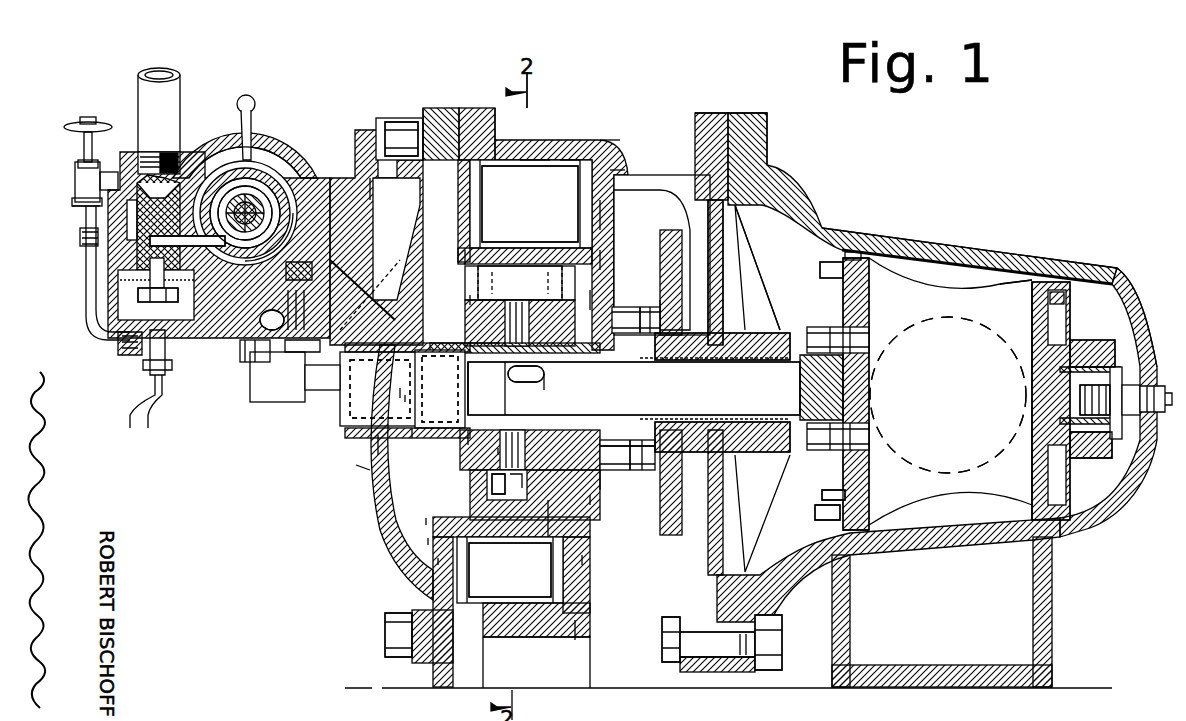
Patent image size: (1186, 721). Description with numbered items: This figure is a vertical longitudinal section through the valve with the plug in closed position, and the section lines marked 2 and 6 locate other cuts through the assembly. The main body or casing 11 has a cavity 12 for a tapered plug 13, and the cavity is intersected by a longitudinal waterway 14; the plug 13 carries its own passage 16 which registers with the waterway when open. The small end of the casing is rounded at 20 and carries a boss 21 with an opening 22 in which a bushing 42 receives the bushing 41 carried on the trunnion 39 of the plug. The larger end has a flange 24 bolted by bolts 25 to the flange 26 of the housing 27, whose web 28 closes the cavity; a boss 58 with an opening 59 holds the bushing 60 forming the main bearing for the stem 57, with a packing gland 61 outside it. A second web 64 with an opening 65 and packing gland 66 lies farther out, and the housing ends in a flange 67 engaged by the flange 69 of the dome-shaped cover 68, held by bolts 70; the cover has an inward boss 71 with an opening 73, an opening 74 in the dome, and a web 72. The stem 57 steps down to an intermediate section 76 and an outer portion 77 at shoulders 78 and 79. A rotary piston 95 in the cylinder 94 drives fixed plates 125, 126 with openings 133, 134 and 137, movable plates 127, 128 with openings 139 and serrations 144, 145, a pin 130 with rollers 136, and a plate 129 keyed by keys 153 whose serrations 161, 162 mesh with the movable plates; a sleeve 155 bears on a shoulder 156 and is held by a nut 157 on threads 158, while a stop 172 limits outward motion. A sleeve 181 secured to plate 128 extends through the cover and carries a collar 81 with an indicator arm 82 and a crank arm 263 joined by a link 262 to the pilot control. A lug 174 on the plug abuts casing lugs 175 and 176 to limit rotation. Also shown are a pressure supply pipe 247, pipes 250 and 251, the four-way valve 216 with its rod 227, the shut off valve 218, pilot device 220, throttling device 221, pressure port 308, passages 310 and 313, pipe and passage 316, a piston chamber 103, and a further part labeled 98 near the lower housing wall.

The section line 2- 2 is at (526, 81).
The section line 6- 6 is at (72, 214).
The main body or casing 11 is at (935, 250).
The cavity 12 is at (1010, 272).
The tapered plug 13 is at (845, 258).
The longitudinal waterway or opening 14 is at (905, 330).
The passage 16 is at (860, 488).
The rounded small end 20 is at (1125, 298).
The boss 21 is at (1090, 350).
The opening 22 is at (1105, 380).
The outwardly projecting flange 24 is at (767, 125).
The bolts 25 is at (782, 644).
The flange 26 is at (712, 118).
The housing 27 is at (585, 150).
The web 28 is at (723, 252).
The trunnion 39 is at (1050, 405).
The bushing 41 is at (1035, 372).
The bushing 42 is at (1092, 458).
The main shaft or stem 57 is at (634, 388).
The boss 58 is at (770, 345).
The opening 59 is at (748, 440).
The bushing 60 is at (735, 330).
The packing gland 61 is at (640, 475).
The second web 64 is at (606, 215).
The opening 65 is at (640, 320).
The packing gland 66 is at (600, 470).
The outwardly projecting flange 67 is at (478, 108).
The cover 68 is at (382, 522).
The flange 69 is at (440, 108).
The bolts 70 is at (385, 628).
The central inwardly projecting boss 71 is at (380, 450).
The web 72 is at (428, 520).
The opening 73 is at (360, 470).
The opening 74 is at (415, 430).
The intermediate section of the valve stem 76 is at (590, 500).
The outer portion of the stem 77 is at (400, 392).
The shoulder 78 is at (545, 396).
The shoulder 79 is at (455, 384).
The collar 81 is at (250, 380).
The indicator arm 82 is at (380, 440).
The cylinder 94 is at (530, 637).
The fluid operated rotary piston 95 is at (585, 560).
The housing 98 is at (585, 630).
The chamber 103 is at (570, 160).
The fixed plate 125 is at (605, 260).
The fixed plate 126 is at (535, 160).
The movable plate 127 is at (550, 500).
The movable plate 128 is at (440, 560).
The plate 129 is at (500, 482).
The pin 130 is at (520, 281).
The opening 133 is at (650, 305).
The opening 134 is at (470, 300).
The rollers 136 is at (614, 175).
The openings 137 is at (465, 258).
The opening 139 is at (598, 300).
The serrations or teeth 144 is at (600, 480).
The serrations or teeth 145 is at (480, 345).
The keys 153 is at (524, 374).
The sleeve 155 is at (470, 440).
The shoulder 156 is at (500, 450).
The nut or collar 157 is at (437, 389).
The threads 158 is at (405, 400).
The serrations 161 is at (525, 490).
The serrations 162 is at (530, 204).
The stop 172 is at (430, 540).
The lug 174 is at (822, 495).
The lug 175 is at (815, 518).
The lug 176 is at (820, 262).
The sleeve 181 is at (375, 389).
The sleeve type four-way valve 216 is at (253, 205).
The power supply shut off valve 218 is at (120, 293).
The secondary pilot valve device 220 is at (300, 280).
The throttling valve device 221 is at (80, 178).
The rod 227 is at (265, 200).
The pipe 247 is at (175, 88).
The pipe 250 is at (80, 238).
The pipe 251 is at (84, 270).
The link 262 is at (240, 345).
The crank arm 263 is at (290, 330).
The port 308 is at (215, 162).
The passage 310 is at (410, 125).
The passage 313 is at (380, 180).
The pipe and passage 316 is at (248, 115).